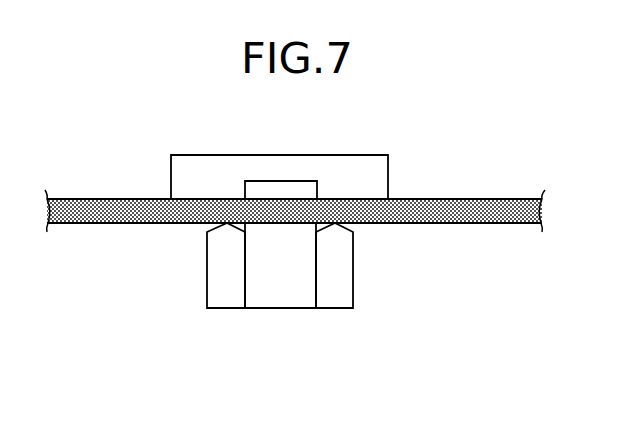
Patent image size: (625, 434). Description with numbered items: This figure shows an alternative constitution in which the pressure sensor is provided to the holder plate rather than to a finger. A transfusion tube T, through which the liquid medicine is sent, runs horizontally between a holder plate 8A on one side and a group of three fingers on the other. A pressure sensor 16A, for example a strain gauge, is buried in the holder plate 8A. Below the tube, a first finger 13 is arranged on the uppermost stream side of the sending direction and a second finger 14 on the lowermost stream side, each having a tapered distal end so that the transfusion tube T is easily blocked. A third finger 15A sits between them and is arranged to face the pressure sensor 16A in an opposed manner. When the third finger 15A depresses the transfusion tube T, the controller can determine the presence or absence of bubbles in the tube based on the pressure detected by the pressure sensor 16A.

The transfusion tube T is at (100, 198).
The holder plate 8A is at (352, 155).
The pressure sensor 16A is at (281, 181).
The first finger 13 is at (230, 310).
The third finger 15A is at (278, 310).
The second finger 14 is at (330, 310).